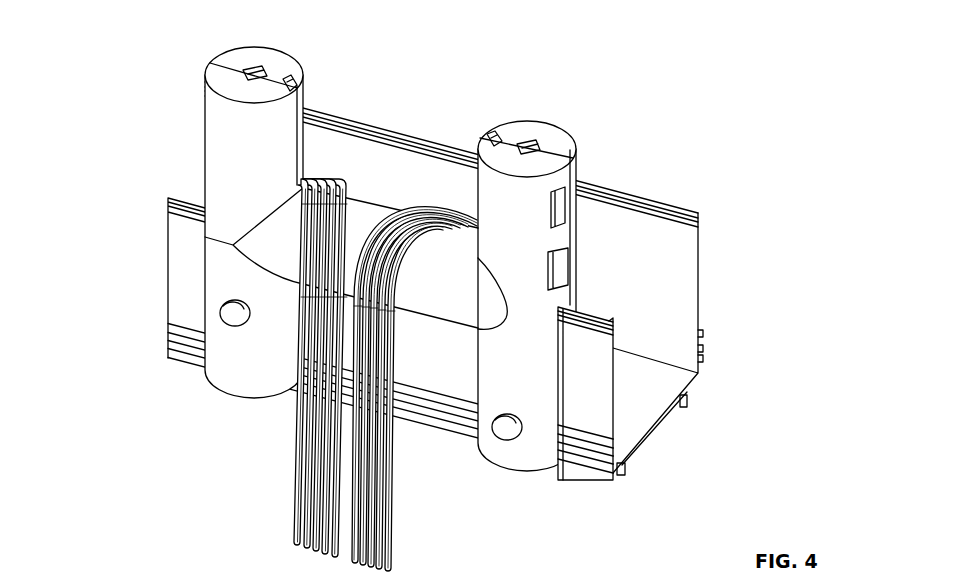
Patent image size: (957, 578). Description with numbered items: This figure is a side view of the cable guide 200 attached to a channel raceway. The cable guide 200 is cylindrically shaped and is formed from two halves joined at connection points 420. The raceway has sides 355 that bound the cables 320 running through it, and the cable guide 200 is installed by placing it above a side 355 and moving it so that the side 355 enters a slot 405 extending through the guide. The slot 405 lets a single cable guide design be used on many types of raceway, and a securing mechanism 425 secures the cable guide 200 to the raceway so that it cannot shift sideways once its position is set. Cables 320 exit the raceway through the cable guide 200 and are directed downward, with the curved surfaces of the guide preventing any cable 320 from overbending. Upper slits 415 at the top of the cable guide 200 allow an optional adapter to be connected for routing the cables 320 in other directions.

The cable guide 200 is at (118, 78).
The upper slit 415 is at (300, 100).
The connection point 420 is at (530, 143).
The side 355 is at (704, 222).
The cable 320 is at (393, 362).
The securing mechanism 425 is at (572, 470).
The slot 405 is at (560, 360).